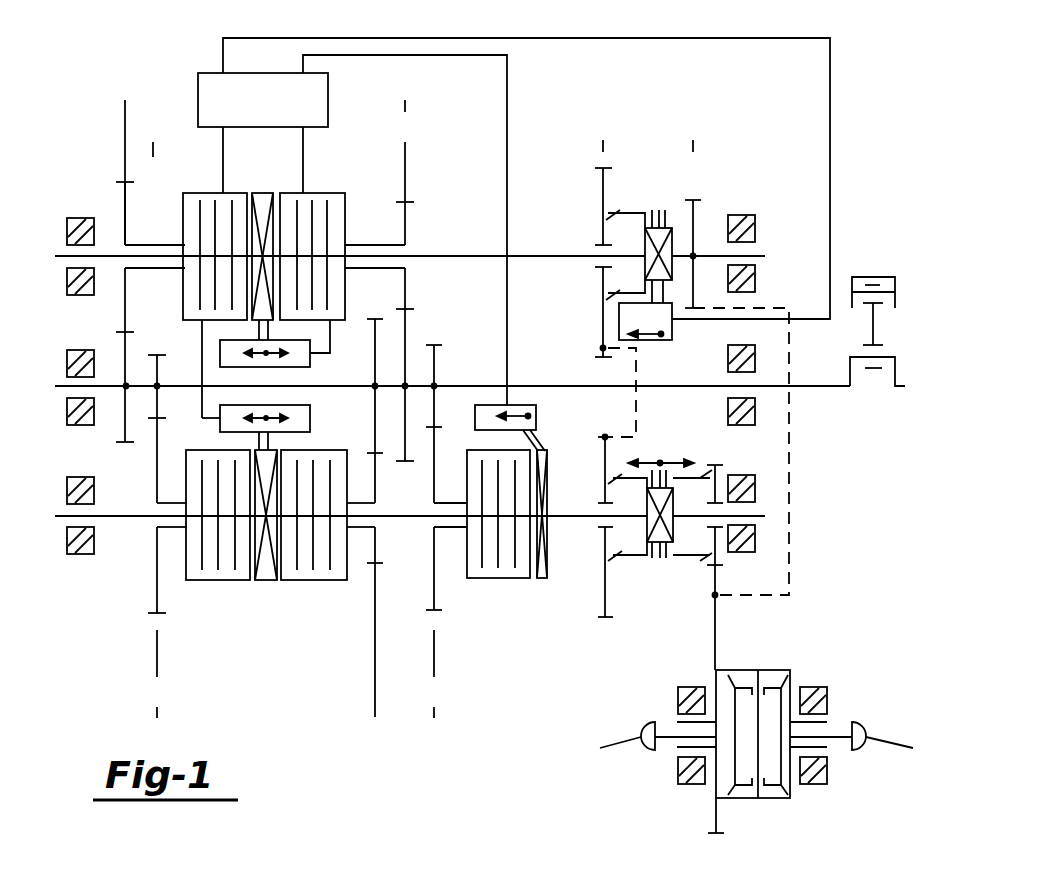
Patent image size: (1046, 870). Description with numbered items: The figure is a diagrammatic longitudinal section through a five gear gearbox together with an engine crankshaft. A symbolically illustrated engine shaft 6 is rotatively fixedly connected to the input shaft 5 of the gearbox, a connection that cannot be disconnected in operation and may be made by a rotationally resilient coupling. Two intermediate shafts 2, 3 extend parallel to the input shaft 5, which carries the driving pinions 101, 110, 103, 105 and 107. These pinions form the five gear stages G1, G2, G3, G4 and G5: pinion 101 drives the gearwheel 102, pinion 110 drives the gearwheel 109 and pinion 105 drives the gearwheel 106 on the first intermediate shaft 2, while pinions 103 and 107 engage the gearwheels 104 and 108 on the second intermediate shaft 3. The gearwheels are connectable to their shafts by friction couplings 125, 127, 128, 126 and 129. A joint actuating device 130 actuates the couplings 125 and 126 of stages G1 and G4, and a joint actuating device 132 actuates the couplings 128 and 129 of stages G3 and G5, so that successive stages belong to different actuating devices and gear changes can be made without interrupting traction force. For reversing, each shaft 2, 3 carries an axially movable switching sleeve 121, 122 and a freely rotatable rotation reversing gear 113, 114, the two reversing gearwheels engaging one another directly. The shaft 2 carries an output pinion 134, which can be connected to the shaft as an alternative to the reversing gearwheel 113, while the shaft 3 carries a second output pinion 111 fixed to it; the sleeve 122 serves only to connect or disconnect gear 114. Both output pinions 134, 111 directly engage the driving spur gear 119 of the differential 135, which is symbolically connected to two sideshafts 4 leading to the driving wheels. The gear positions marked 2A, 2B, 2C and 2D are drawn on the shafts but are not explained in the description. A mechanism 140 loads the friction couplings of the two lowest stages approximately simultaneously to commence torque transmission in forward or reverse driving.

The first intermediate shaft 2 is at (63, 515).
The second intermediate shaft 3 is at (63, 255).
The sideshafts 4 is at (660, 741).
The input shaft 5 is at (800, 386).
The engine shaft 6 is at (838, 386).
The driving pinion 101 is at (168, 340).
The gearwheel 102 is at (155, 579).
The driving pinion 103 is at (122, 420).
The gearwheel 104 is at (122, 200).
The driving pinion 105 is at (375, 404).
The gearwheel 106 is at (372, 563).
The driving pinion 107 is at (403, 331).
The gearwheel 108 is at (403, 221).
The gearwheel 109 is at (434, 596).
The driving pinion 110 is at (434, 361).
The second output pinion 111 is at (696, 215).
The rotation reversing gear 113 is at (603, 601).
The rotation reversing gear 114 is at (600, 229).
The driving spur gear 119 is at (716, 812).
The switching sleeve 121 is at (658, 546).
The switching sleeve 122 is at (657, 228).
The friction coupling 125 is at (225, 580).
The friction coupling 126 is at (320, 581).
The friction coupling 127 is at (507, 569).
The friction coupling 128 is at (205, 197).
The friction coupling 129 is at (305, 198).
The joint actuating device 130 is at (265, 581).
The joint actuating device 132 is at (262, 202).
The output pinion 134 is at (716, 541).
The differential 135 is at (768, 800).
The mechanism for approximately simultaneously loading friction couplings 140 is at (213, 65).
The gear set 2A is at (157, 418).
The gear set 2B is at (411, 417).
The gear 2C is at (602, 133).
The gear 2D is at (693, 133).
The first gear stage G1 is at (158, 734).
The second gear stage G2 is at (438, 736).
The third gear stage G3 is at (125, 161).
The fourth gear stage G4 is at (378, 736).
The fifth gear stage G5 is at (403, 94).